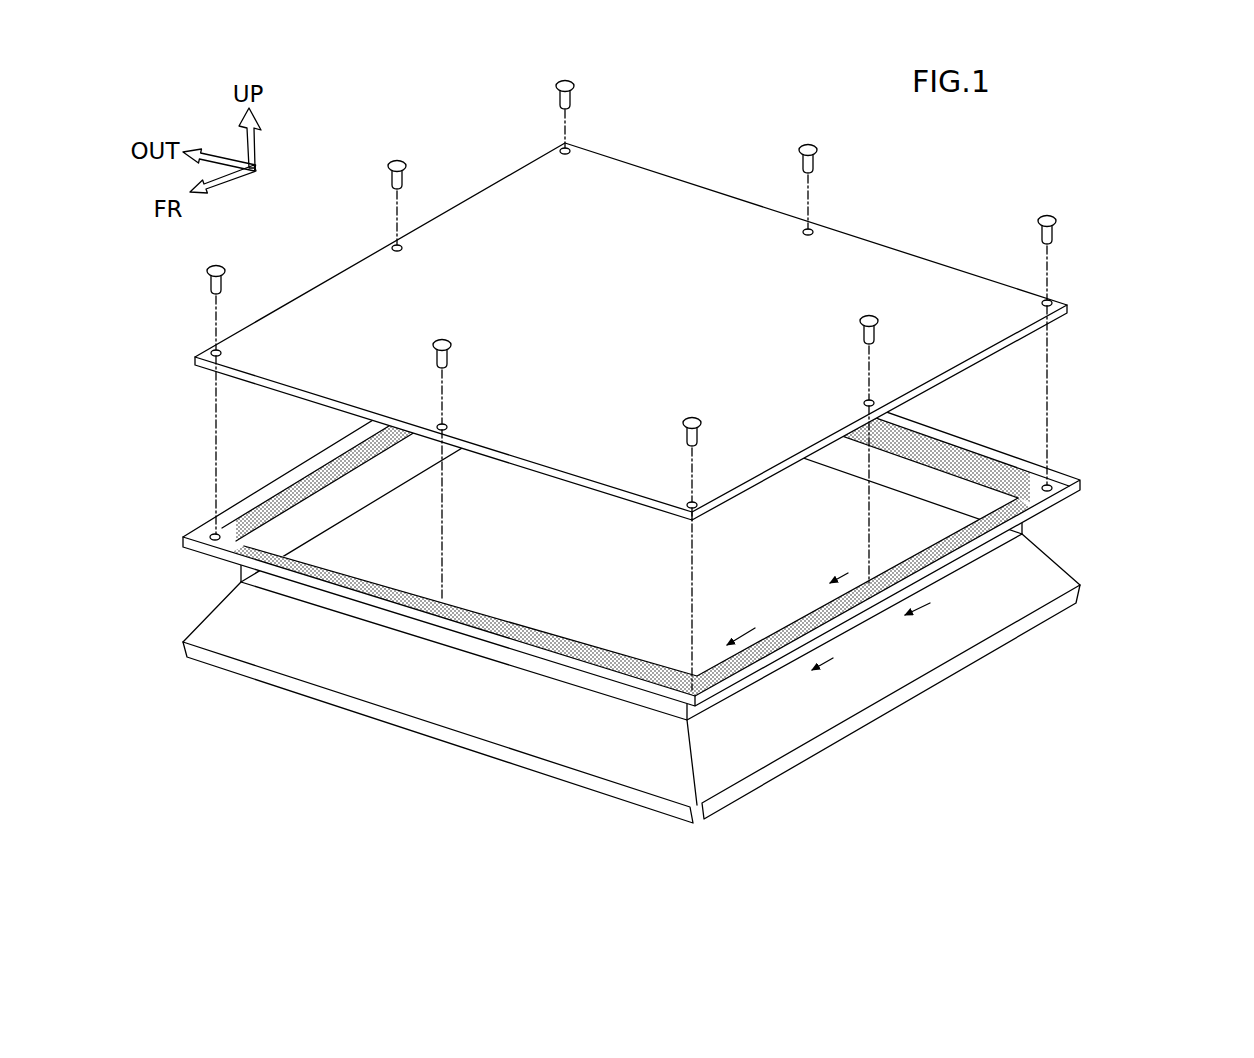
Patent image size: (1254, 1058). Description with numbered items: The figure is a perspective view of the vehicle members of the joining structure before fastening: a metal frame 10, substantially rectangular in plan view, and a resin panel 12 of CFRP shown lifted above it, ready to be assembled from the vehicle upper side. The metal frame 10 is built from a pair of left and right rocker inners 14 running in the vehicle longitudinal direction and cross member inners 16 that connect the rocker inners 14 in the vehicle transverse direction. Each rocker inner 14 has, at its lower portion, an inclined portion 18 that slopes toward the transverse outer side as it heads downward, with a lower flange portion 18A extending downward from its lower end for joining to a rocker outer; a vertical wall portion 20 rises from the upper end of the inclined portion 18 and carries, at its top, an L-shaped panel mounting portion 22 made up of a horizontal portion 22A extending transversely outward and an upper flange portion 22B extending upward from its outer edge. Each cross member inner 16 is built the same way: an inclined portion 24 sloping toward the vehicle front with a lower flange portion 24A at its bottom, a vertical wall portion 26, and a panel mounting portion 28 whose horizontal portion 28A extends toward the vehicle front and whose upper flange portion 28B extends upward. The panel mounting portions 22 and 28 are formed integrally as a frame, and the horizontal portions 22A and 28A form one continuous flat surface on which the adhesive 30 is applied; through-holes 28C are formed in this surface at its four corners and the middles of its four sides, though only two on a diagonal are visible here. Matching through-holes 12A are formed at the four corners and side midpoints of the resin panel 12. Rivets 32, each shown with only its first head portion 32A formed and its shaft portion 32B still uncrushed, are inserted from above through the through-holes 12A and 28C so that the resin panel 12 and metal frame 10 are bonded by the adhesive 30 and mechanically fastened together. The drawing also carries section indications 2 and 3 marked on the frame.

The metal frame 10 is at (1155, 449).
The resin panel 12 is at (680, 173).
The through-holes (second through-holes) 12A is at (570, 150).
The rocker inner 14 is at (287, 465).
The cross member inner 16 is at (988, 430).
The inclined portion 18 is at (959, 680).
The lower flange portion 18A is at (1039, 632).
The vertical wall portion 20 is at (405, 470).
The panel mounting portion 22 is at (250, 488).
The horizontal portion 22A is at (319, 505).
The upper flange portion 22B is at (349, 464).
The inclined portion 24 is at (467, 754).
The lower flange portion 24A is at (518, 770).
The vertical wall portion 26 is at (317, 614).
The panel mounting portion 28 is at (196, 562).
The horizontal portion 28A is at (475, 615).
The upper flange portion 28B is at (330, 605).
The through-holes (first through-holes) 28C is at (212, 534).
The adhesive 30 is at (574, 648).
The rivet 32 is at (577, 100).
The first head portion 32A is at (555, 90).
The shaft portion 32B is at (560, 110).
The section line 2 is at (791, 638).
The section line 3 is at (888, 584).